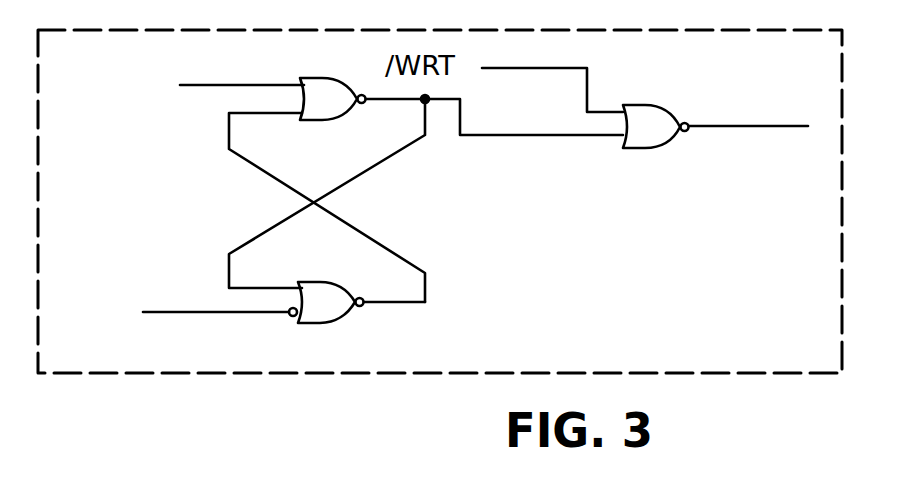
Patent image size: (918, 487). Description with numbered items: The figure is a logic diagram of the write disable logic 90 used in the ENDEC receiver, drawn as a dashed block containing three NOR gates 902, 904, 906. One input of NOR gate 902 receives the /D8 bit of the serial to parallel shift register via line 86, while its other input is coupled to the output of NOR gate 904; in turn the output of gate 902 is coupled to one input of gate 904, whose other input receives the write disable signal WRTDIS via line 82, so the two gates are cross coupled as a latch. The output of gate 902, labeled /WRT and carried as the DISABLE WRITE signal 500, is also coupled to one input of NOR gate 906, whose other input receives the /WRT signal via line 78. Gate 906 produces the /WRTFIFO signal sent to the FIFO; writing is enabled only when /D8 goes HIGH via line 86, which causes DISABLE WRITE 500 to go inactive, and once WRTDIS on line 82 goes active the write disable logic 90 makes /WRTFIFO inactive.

The write disable logic 90 is at (683, 330).
The line for /D8 bit 86 is at (213, 87).
The WRTDIS line 82 is at (161, 312).
The /WRT line 78 is at (525, 67).
The DISABLE WRITE signal 500 is at (465, 116).
The NOR gate 902 is at (318, 80).
The NOR gate 904 is at (322, 318).
The NOR gate 906 is at (660, 105).